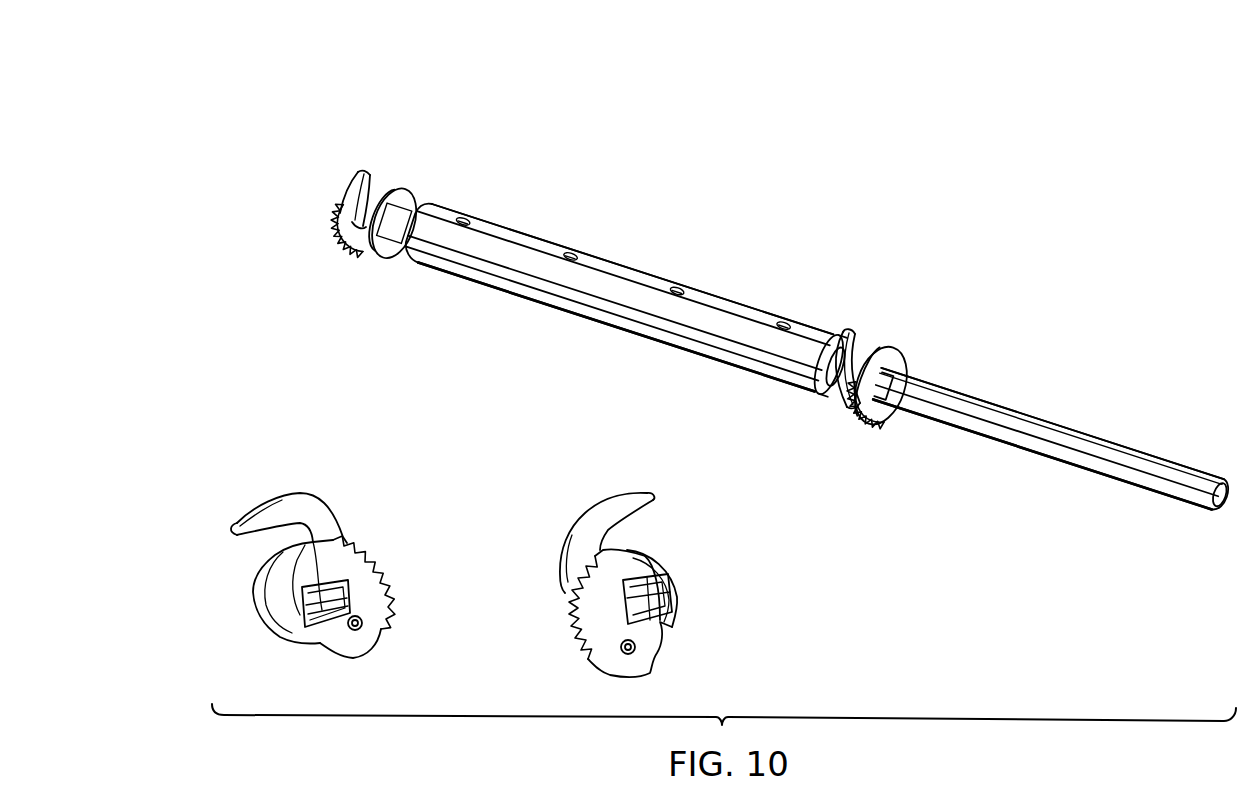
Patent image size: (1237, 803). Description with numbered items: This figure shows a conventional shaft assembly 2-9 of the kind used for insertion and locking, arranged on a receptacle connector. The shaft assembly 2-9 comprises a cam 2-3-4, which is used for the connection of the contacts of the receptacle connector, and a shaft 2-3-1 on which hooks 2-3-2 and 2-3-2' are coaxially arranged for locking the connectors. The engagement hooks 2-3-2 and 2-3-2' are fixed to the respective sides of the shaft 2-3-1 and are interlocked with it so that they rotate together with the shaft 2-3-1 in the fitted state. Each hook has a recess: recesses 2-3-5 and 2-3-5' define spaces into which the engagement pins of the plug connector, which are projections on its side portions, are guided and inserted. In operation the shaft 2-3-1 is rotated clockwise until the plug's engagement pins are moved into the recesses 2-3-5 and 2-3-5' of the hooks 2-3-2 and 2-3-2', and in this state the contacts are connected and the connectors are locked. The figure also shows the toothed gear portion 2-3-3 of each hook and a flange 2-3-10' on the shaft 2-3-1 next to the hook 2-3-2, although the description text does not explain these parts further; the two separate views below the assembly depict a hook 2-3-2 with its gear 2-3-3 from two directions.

The shaft assembly 2-9 is at (808, 108).
The shaft 2-3-1 is at (1092, 431).
The hook 2-3-2 is at (531, 441).
The hook 2-3-2' is at (376, 172).
The gear 2-3-3 is at (352, 570).
The cam 2-3-4 is at (636, 271).
The recess 2-3-5 is at (362, 256).
The recess 2-3-5' is at (876, 428).
The flange ring 2-3-10' is at (892, 358).